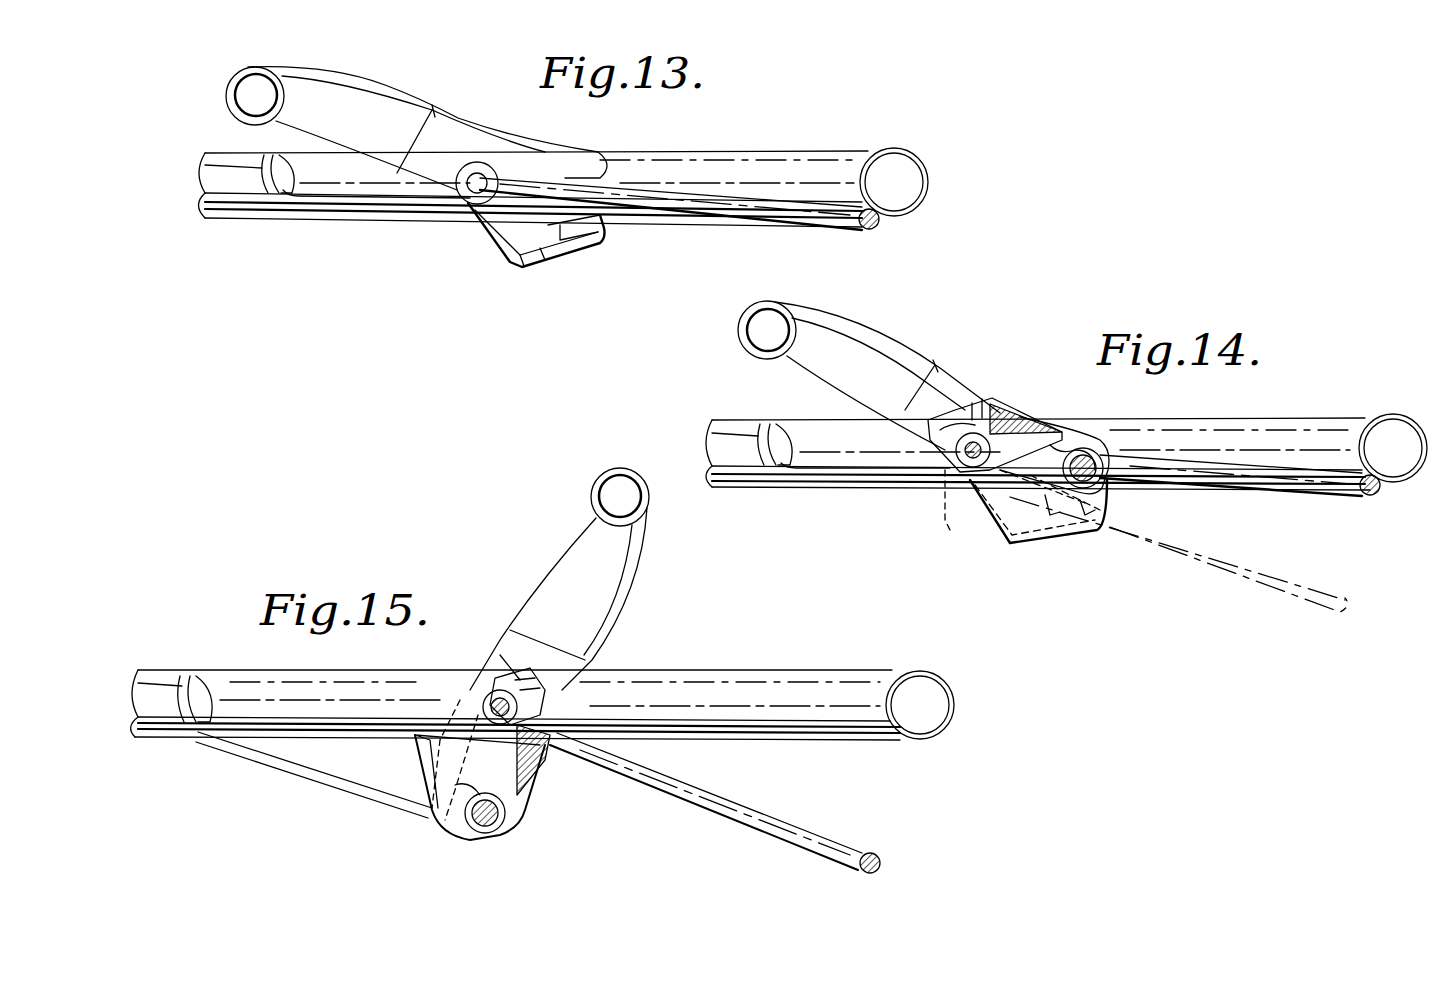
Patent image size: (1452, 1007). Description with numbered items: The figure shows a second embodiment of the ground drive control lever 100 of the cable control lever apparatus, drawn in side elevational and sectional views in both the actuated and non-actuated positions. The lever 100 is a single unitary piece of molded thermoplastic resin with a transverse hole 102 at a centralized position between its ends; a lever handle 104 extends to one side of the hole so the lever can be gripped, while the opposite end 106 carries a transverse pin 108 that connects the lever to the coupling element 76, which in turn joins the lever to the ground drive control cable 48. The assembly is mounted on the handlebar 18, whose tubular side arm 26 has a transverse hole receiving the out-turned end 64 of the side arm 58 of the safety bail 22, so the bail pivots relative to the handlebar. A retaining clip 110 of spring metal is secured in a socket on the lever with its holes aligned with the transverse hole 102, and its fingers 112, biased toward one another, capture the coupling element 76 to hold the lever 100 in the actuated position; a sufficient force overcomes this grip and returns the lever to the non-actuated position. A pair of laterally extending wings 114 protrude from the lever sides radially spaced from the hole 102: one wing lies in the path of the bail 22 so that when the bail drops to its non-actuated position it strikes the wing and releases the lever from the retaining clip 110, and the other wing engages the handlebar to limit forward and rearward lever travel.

In FIG. 13, the handlebar 18 is at (945, 202).
In FIG. 14, the handlebar 18 is at (1413, 497).
In FIG. 15, the handlebar 18 is at (965, 718).
In FIG. 13, the safety bail 22 is at (862, 240).
In FIG. 14, the safety bail 22 is at (1365, 506).
In FIG. 15, the safety bail 22 is at (885, 846).
In FIG. 13, the side arm 26 is at (856, 163).
In FIG. 14, the side arm 26 is at (1352, 430).
In FIG. 15, the side arm 26 is at (880, 690).
In FIG. 13, the cable 48 is at (215, 168).
In FIG. 14, the cable 48 is at (715, 432).
In FIG. 15, the cable 48 is at (165, 698).
In FIG. 13, the side arm 58 is at (782, 224).
In FIG. 14, the side arm 58 is at (1287, 487).
In FIG. 15, the side arm 58 is at (725, 792).
In FIG. 14, the out-turned end 64 is at (1005, 422).
In FIG. 15, the out-turned end 64 is at (520, 662).
In FIG. 13, the coupling element 76 is at (375, 212).
In FIG. 14, the coupling element 76 is at (873, 482).
In FIG. 15, the coupling element 76 is at (350, 792).
In FIG. 13, the ground drive control lever 100 is at (507, 118).
In FIG. 14, the ground drive control lever 100 is at (982, 330).
In FIG. 15, the ground drive control lever 100 is at (655, 578).
In FIG. 14, the transverse hole 102 is at (963, 470).
In FIG. 15, the transverse hole 102 is at (488, 740).
In FIG. 13, the lever handle 104 is at (357, 108).
In FIG. 14, the lever handle 104 is at (855, 332).
In FIG. 15, the lever handle 104 is at (595, 546).
In FIG. 13, the end of the lever 106 is at (596, 177).
In FIG. 14, the end of the lever 106 is at (1100, 448).
In FIG. 15, the end of the lever 106 is at (505, 838).
In FIG. 14, the transverse pin 108 is at (1105, 456).
In FIG. 15, the transverse pin 108 is at (455, 830).
In FIG. 14, the retaining clip 110 is at (982, 412).
In FIG. 15, the retaining clip 110 is at (545, 690).
In FIG. 14, the fingers 112 is at (977, 500).
In FIG. 15, the fingers 112 is at (466, 706).
In FIG. 13, the wings 114 is at (580, 246).
In FIG. 14, the wings 114 is at (1082, 520).
In FIG. 15, the wings 114 is at (415, 778).